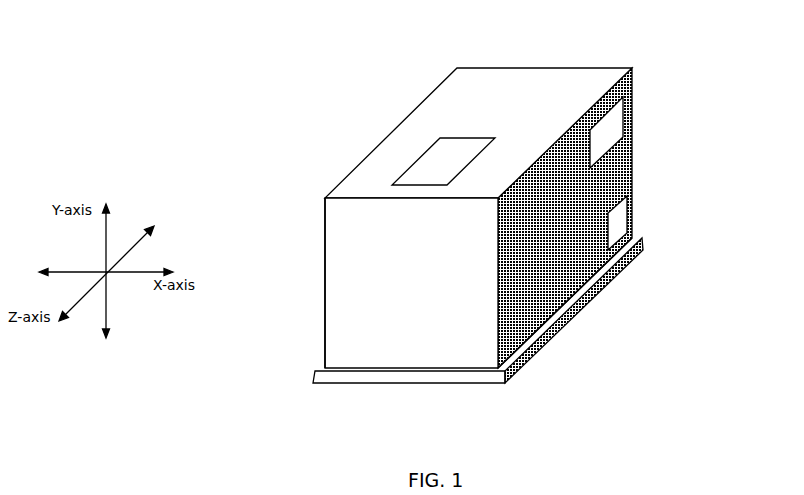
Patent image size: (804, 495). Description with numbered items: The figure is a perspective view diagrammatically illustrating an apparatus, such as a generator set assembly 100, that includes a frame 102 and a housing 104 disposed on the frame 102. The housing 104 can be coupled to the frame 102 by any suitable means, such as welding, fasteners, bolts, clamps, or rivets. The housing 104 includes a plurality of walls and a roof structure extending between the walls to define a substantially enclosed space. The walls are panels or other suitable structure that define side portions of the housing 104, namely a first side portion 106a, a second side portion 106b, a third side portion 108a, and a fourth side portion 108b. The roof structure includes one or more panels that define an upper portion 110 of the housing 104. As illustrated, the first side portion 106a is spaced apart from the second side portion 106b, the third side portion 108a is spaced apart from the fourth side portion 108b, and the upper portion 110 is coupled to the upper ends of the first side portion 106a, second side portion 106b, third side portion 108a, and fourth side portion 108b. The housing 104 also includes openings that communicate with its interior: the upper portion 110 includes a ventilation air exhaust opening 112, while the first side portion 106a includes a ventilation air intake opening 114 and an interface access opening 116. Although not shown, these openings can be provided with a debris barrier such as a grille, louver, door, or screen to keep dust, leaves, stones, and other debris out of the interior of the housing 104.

The generator set assembly 100 is at (222, 64).
The frame 102 is at (505, 371).
The housing 104 is at (504, 193).
The first side portion 106a is at (505, 330).
The second side portion 106b is at (325, 233).
The third side portion 108a is at (338, 317).
The fourth side portion 108b is at (632, 143).
The upper portion 110 is at (463, 77).
The ventilation air exhaust opening 112 is at (424, 160).
The ventilation air intake opening 114 is at (622, 224).
The interface access opening 116 is at (624, 115).